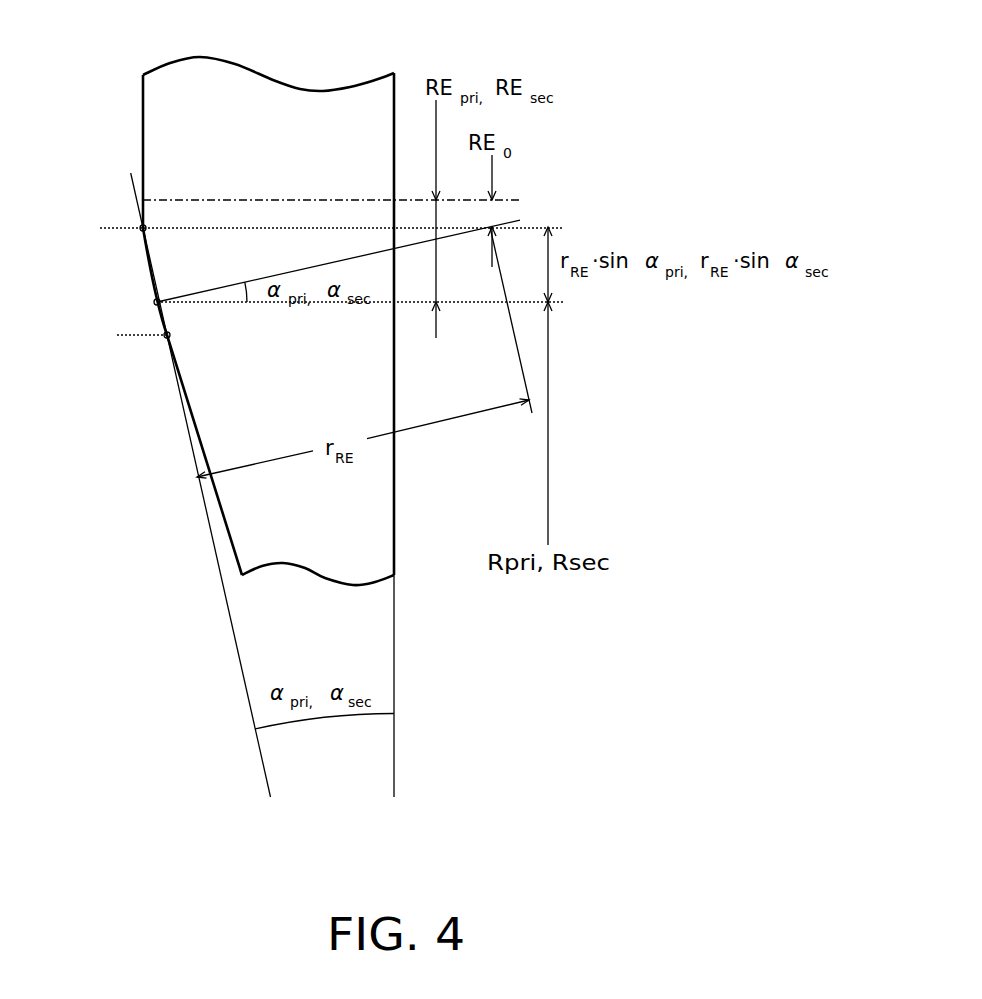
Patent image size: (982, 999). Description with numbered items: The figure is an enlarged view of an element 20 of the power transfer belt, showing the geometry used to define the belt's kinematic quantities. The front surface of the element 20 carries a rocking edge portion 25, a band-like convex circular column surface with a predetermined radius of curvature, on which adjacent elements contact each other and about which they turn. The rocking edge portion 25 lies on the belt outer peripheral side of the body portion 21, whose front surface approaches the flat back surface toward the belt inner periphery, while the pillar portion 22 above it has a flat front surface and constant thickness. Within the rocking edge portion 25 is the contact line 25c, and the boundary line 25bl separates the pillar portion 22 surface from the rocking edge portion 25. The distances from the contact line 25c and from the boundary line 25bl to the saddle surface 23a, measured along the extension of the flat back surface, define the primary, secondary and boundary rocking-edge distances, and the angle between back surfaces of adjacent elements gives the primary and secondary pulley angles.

The element 20 is at (213, 510).
The body portion 21 is at (220, 440).
The pillar portion 22 is at (160, 87).
The saddle surface 23a is at (243, 200).
The rocking edge portion 25 is at (117, 229).
The boundary line 25bl is at (143, 228).
The contact line 25c is at (155, 304).